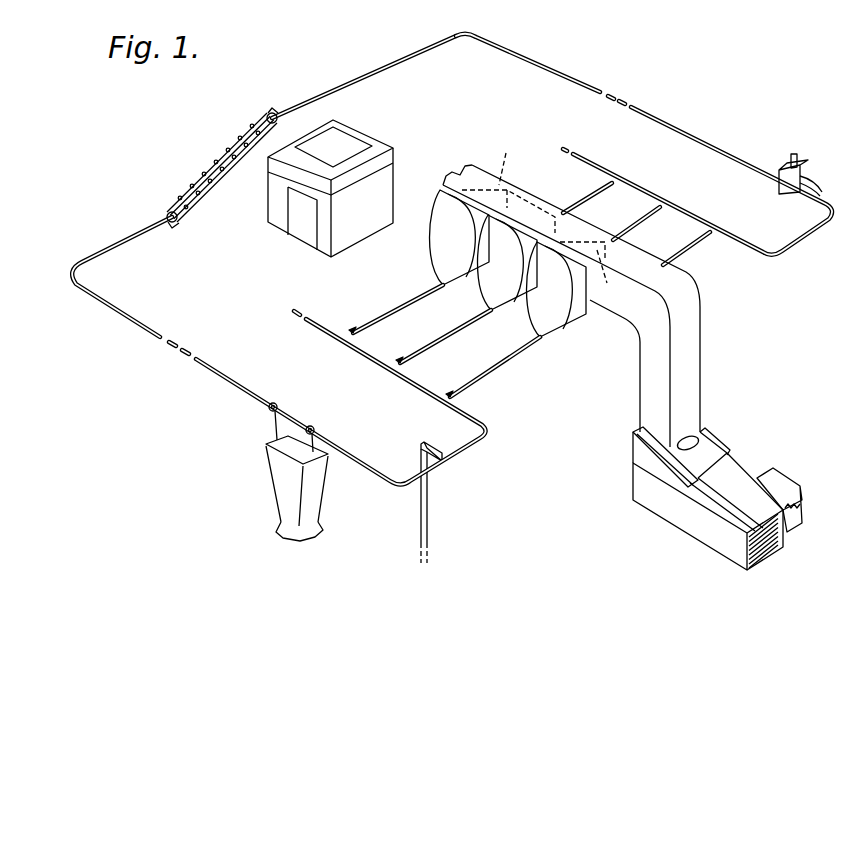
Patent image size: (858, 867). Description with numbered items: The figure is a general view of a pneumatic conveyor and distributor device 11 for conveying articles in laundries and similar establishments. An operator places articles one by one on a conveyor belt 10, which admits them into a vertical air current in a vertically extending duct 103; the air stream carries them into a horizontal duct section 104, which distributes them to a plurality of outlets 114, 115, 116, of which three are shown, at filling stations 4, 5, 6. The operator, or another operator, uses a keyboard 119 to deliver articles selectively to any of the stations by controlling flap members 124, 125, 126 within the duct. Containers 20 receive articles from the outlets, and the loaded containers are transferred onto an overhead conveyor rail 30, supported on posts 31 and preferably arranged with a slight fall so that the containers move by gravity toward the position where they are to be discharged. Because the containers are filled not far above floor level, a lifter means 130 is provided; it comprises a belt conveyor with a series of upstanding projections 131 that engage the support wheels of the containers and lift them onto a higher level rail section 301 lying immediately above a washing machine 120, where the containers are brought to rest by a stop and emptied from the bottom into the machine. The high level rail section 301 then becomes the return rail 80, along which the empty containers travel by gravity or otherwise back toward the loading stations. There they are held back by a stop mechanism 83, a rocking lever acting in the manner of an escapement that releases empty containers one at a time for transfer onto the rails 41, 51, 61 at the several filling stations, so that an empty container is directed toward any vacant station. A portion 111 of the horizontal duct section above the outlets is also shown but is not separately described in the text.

The filling station 4 is at (516, 319).
The filling station 5 is at (466, 289).
The filling station 6 is at (419, 260).
The conveyor belt 10 is at (713, 490).
The pneumatic conveyor and distributor device 11 is at (635, 411).
The container 20 is at (270, 468).
The overhead conveyor rail 30 is at (482, 437).
The post 31 is at (428, 524).
The pipe 41 is at (700, 239).
The pipe 51 is at (651, 213).
The pipe 61 is at (606, 187).
The return rail 80 is at (573, 76).
The stop mechanism 83 is at (818, 188).
The vertically extending duct 103 is at (690, 369).
The horizontal duct section 104 is at (668, 283).
The top bar 111 is at (458, 178).
The outlet 114 is at (566, 302).
The outlet 115 is at (440, 235).
The outlet 116 is at (444, 236).
The keyboard 119 is at (781, 483).
The washing machine 120 is at (385, 221).
The flap member 124 is at (593, 272).
The flap member 125 is at (522, 216).
The flap member 126 is at (508, 159).
The lifter means 130 is at (222, 168).
The upstanding projection 131 is at (231, 147).
The higher level rail section 301 is at (343, 86).